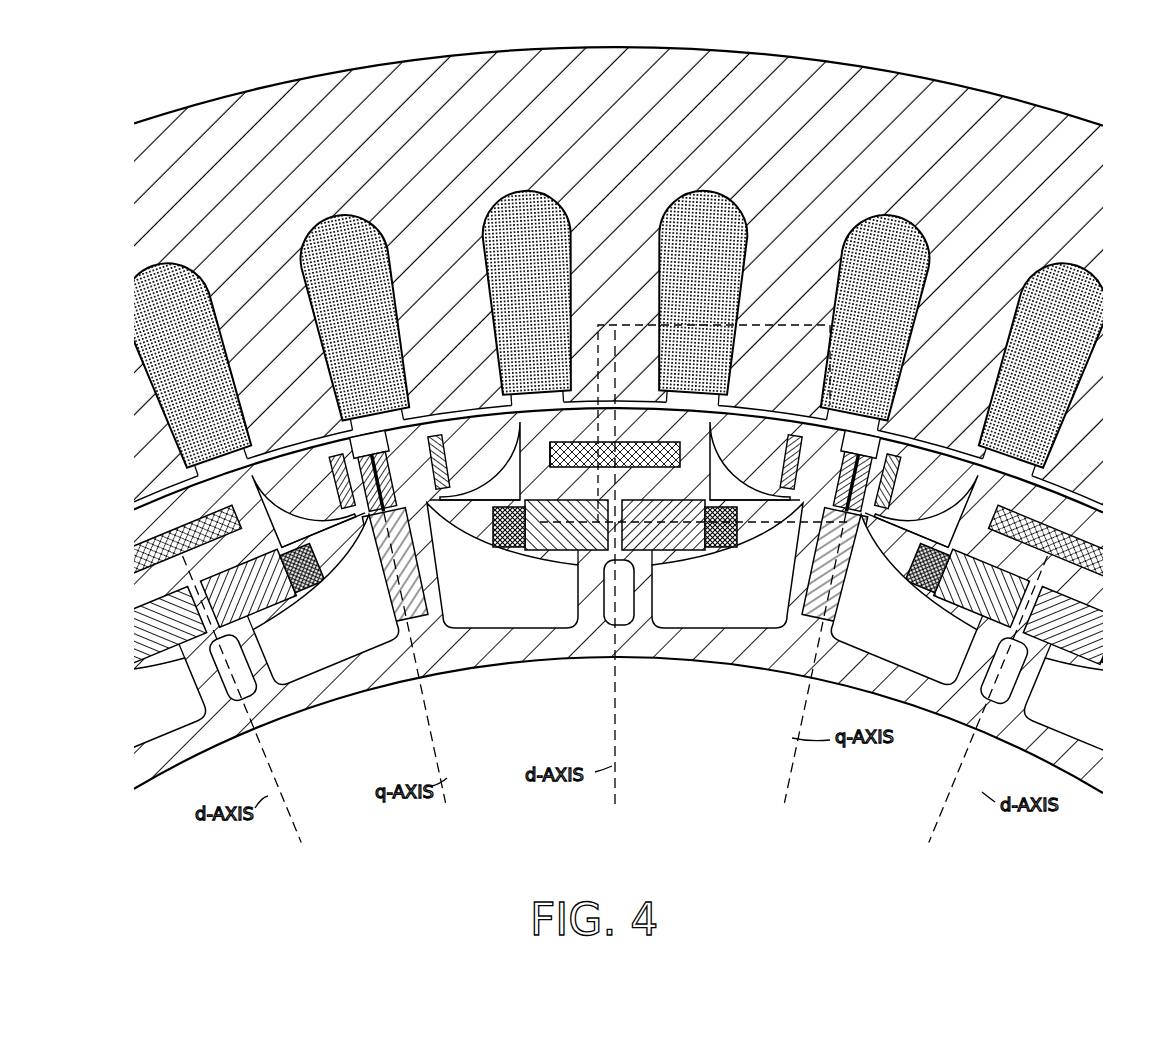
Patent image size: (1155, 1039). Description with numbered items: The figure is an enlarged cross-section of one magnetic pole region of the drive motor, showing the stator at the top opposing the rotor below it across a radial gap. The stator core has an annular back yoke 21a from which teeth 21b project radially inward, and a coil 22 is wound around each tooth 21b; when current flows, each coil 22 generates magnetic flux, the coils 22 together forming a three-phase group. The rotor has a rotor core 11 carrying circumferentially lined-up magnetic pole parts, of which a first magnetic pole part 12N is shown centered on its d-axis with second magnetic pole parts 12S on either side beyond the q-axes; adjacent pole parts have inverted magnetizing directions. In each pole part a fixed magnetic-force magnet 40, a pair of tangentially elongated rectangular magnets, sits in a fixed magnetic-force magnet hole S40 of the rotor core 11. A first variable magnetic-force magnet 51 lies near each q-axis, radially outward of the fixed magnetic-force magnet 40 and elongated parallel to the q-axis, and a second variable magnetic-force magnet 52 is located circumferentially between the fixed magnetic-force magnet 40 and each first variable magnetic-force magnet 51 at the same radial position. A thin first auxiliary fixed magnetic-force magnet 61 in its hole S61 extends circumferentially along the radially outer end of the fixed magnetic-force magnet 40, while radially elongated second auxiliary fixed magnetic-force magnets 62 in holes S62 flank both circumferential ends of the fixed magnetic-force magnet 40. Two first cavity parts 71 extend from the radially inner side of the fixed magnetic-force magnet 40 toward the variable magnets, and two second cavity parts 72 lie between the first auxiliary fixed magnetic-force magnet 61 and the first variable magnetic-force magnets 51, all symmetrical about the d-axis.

The rotor core 11 is at (393, 690).
The first magnetic pole part 12N is at (650, 680).
The second magnetic pole part 12S is at (294, 744).
The back yoke 21a is at (1043, 123).
The teeth 21b is at (788, 297).
The coil 22 is at (903, 232).
The fixed magnetic-force magnet 40 is at (598, 567).
The fixed magnetic-force magnet hole S40 is at (576, 567).
The first variable magnetic-force magnet 51 is at (390, 430).
The second variable magnetic-force magnet 52 is at (445, 424).
The first auxiliary fixed magnetic-force magnet 61 is at (630, 442).
The first auxiliary fixed magnetic-force magnet hole S61 is at (566, 443).
The second auxiliary fixed magnetic-force magnet 62 is at (497, 535).
The second auxiliary fixed magnetic-force magnet hole S62 is at (512, 548).
The first cavity part 71 is at (505, 630).
The second cavity part 72 is at (500, 485).